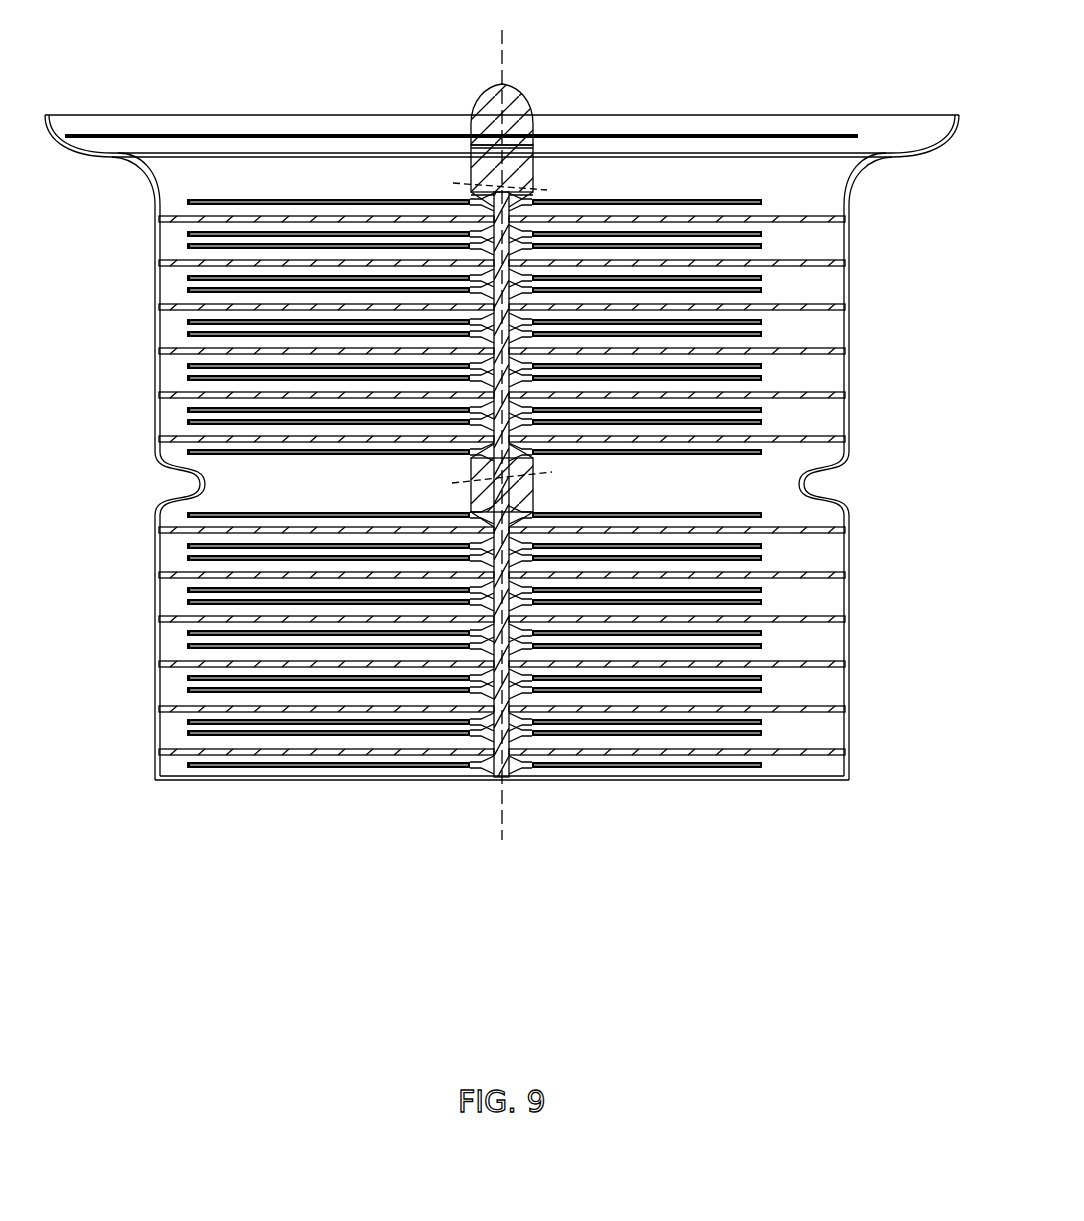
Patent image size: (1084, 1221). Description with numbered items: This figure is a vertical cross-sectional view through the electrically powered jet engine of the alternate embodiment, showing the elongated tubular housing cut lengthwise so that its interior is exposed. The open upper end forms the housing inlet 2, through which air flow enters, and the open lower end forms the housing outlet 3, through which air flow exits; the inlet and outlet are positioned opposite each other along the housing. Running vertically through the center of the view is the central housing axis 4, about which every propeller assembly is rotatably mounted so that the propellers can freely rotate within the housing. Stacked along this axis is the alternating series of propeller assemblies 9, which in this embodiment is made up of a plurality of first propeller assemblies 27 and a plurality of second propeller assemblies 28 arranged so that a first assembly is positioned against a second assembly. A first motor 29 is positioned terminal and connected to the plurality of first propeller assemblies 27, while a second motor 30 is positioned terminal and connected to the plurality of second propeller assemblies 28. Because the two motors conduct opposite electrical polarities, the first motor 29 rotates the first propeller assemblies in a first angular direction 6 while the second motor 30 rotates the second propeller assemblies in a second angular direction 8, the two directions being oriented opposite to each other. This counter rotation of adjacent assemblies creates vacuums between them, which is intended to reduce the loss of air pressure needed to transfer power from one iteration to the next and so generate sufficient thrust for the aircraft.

The housing inlet 2 is at (827, 124).
The housing outlet 3 is at (779, 790).
The central housing axis 4 is at (500, 46).
The first angular direction 6 is at (543, 180).
The second angular direction 8 is at (460, 474).
The alternating series of propeller assemblies 9 is at (521, 64).
The plurality of first propeller assemblies 27 is at (189, 234).
The plurality of second propeller assemblies 28 is at (189, 547).
The first motor 29 is at (472, 160).
The second motor 30 is at (527, 491).